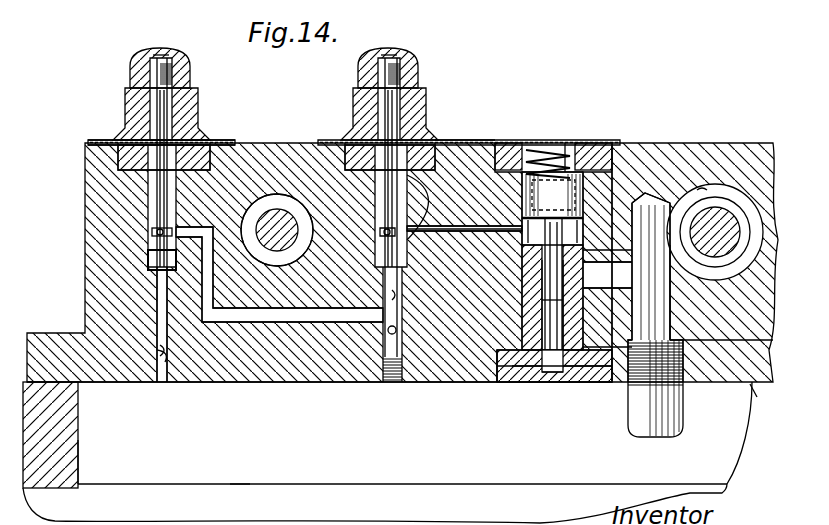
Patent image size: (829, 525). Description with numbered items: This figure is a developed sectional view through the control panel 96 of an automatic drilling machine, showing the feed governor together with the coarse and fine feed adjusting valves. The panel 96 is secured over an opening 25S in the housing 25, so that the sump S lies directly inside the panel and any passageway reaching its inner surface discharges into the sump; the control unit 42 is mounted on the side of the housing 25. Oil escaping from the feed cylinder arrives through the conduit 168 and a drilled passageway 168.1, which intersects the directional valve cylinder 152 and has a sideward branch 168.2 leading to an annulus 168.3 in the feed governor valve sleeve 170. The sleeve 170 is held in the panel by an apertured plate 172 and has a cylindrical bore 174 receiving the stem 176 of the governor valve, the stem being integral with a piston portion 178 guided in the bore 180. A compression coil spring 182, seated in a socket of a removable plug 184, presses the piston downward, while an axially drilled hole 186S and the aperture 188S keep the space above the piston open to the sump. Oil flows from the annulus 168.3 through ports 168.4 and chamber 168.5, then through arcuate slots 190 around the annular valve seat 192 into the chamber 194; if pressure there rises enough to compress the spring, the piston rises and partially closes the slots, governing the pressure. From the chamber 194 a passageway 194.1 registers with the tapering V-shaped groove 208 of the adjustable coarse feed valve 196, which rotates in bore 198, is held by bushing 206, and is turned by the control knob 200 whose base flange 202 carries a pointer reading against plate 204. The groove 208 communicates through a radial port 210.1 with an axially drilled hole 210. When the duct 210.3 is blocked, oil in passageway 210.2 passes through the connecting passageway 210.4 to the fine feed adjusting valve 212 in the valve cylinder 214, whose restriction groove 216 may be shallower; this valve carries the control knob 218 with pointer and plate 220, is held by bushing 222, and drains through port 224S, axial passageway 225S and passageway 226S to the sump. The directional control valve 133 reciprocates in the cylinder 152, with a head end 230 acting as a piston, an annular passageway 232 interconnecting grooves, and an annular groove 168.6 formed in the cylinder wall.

The housing 25 is at (66, 490).
The opening 25S is at (78, 464).
The hydraulic reservoir or sump S is at (238, 485).
The control unit 42 is at (322, 392).
The control panel 96 is at (672, 153).
The directional control valve 133 is at (235, 142).
The directional valve cylinder 152 is at (275, 200).
The conduit 168 is at (673, 421).
The drilled passageway 168.1 is at (672, 300).
The sidewardly directed branch 168.2 is at (585, 290).
The annulus 168.3 is at (556, 262).
The ports 168.4 is at (545, 300).
The chamber 168.5 is at (524, 268).
The annular groove 168.6 is at (702, 188).
The feed governor valve sleeve 170 is at (575, 384).
The apertured plate 172 is at (536, 384).
The cylindrical bore 174 is at (562, 384).
The governor valve stem 176 is at (583, 212).
The piston portion 178 is at (583, 198).
The bore 180 is at (502, 156).
The compression coil spring 182 is at (545, 150).
The removable plug 184 is at (590, 152).
The axially drilled hole 186S is at (545, 322).
The aperture 188S is at (548, 384).
The arcuate slots 190 is at (522, 247).
The annular valve seat 192 is at (563, 236).
The chamber 194 is at (483, 216).
The passageway 194.1 is at (455, 233).
The adjustable coarse feed valve 196 is at (425, 165).
The bore 198 is at (378, 194).
The control knob 200 is at (412, 106).
The base flange 202 is at (320, 142).
The plate 204 is at (482, 140).
The bushing 206 is at (426, 118).
The arcuate V-shaped groove 208 is at (433, 207).
The axially drilled hole 210 is at (383, 252).
The radially drilled port 210.1 is at (383, 232).
The passageway 210.2 is at (400, 300).
The duct 210.3 is at (397, 330).
The connecting passageway 210.4 is at (213, 226).
The fine feed adjusting valve 212 is at (150, 196).
The valve cylinder 214 is at (205, 172).
The V-shaped restriction groove 216 is at (178, 192).
The control knob 218 is at (190, 106).
The plate 220 is at (198, 122).
The bushing 222 is at (125, 165).
The port 224S is at (158, 233).
The axially drilled passageway 225S is at (136, 262).
The passageway 226S is at (158, 380).
The head end 230 is at (247, 252).
The annular passageway 232 is at (166, 380).